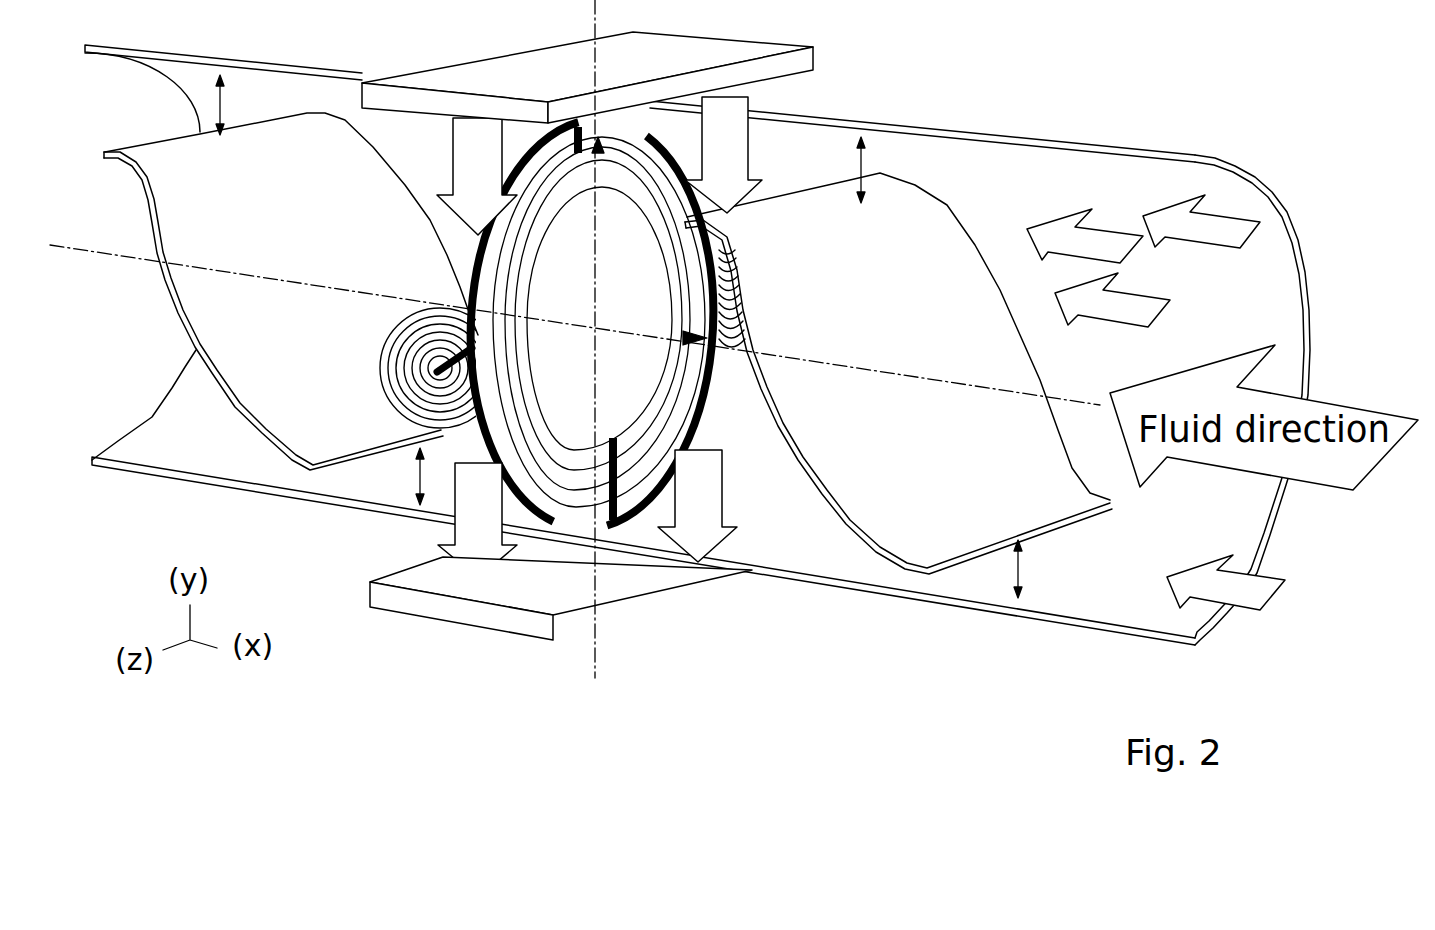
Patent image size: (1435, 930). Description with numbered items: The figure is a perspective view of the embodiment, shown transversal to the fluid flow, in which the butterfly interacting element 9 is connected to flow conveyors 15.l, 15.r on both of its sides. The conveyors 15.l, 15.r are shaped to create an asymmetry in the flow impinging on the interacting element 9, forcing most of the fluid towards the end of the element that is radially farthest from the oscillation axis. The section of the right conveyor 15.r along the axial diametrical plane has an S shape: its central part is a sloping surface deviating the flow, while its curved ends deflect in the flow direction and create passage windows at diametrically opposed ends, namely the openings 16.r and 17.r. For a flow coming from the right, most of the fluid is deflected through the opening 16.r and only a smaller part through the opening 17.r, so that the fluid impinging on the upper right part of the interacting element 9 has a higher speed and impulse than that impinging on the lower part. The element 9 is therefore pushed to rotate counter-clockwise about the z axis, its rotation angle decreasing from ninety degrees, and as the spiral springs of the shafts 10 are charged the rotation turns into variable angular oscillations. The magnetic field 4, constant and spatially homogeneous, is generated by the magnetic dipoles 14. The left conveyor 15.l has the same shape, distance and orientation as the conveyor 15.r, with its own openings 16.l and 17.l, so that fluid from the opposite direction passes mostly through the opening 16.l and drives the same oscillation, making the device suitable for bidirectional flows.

The magnetic field 4 is at (599, 337).
The interacting element 9 is at (592, 323).
The shafts 10 is at (573, 339).
The magnetic dipoles 14 is at (587, 336).
The flow conveyor 15.l is at (281, 261).
The flow conveyor 15.r is at (898, 373).
The opening 16.l is at (366, 476).
The opening 16.r is at (926, 170).
The opening 17.l is at (163, 105).
The opening 17.r is at (1079, 569).